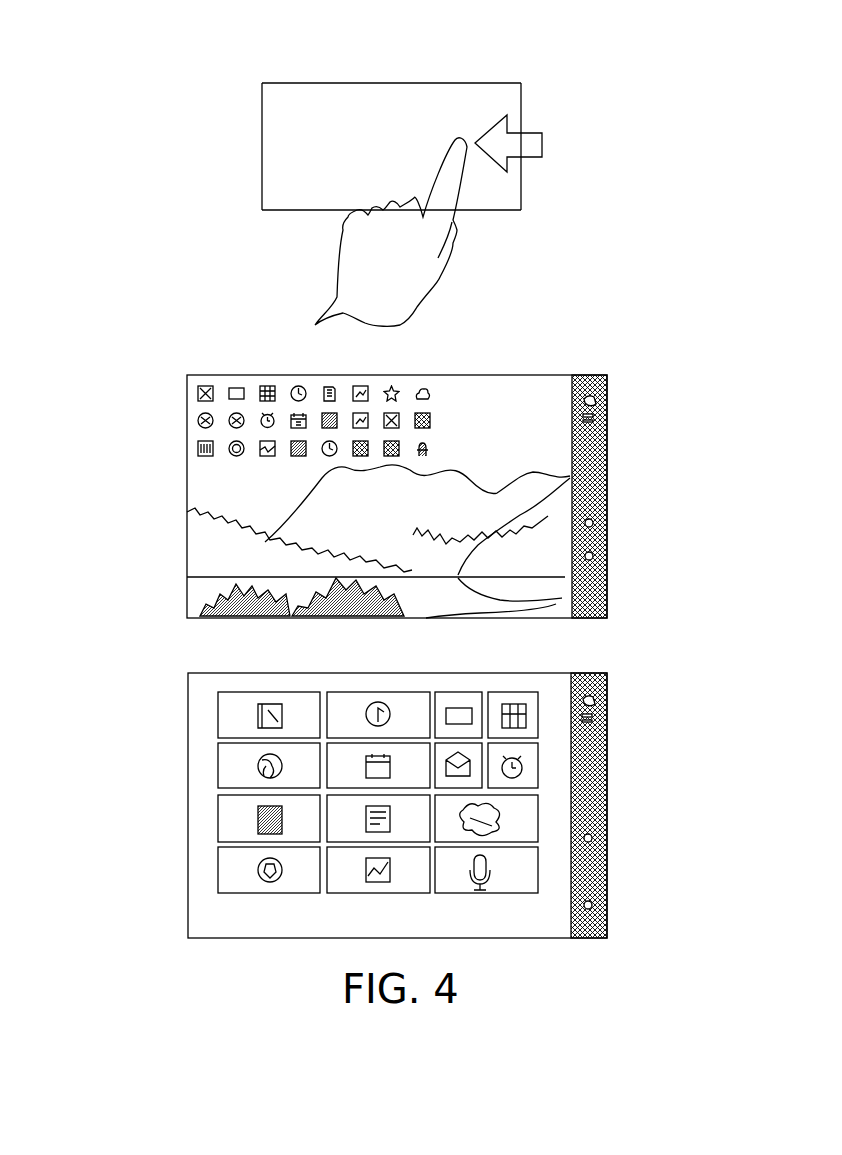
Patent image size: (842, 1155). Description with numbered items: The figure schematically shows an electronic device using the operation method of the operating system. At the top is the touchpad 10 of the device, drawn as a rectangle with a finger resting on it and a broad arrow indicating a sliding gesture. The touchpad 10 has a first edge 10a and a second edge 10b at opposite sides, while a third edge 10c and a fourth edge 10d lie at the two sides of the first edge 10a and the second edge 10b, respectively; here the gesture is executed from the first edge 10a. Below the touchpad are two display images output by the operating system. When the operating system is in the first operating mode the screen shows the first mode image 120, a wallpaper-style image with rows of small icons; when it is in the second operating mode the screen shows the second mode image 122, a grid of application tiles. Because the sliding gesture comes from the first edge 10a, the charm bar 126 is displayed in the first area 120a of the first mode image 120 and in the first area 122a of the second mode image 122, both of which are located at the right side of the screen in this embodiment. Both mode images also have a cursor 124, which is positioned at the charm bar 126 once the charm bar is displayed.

The touchpad 10 is at (394, 149).
The first edge 10a is at (530, 178).
The second edge 10b is at (256, 151).
The third edge 10c is at (390, 78).
The fourth edge 10d is at (299, 222).
The first mode image 120 is at (406, 496).
The first area 120a is at (622, 487).
The second mode image 122 is at (407, 805).
The first area 122a is at (622, 806).
The cursor 124 is at (604, 556).
The charm bar 126 is at (604, 524).